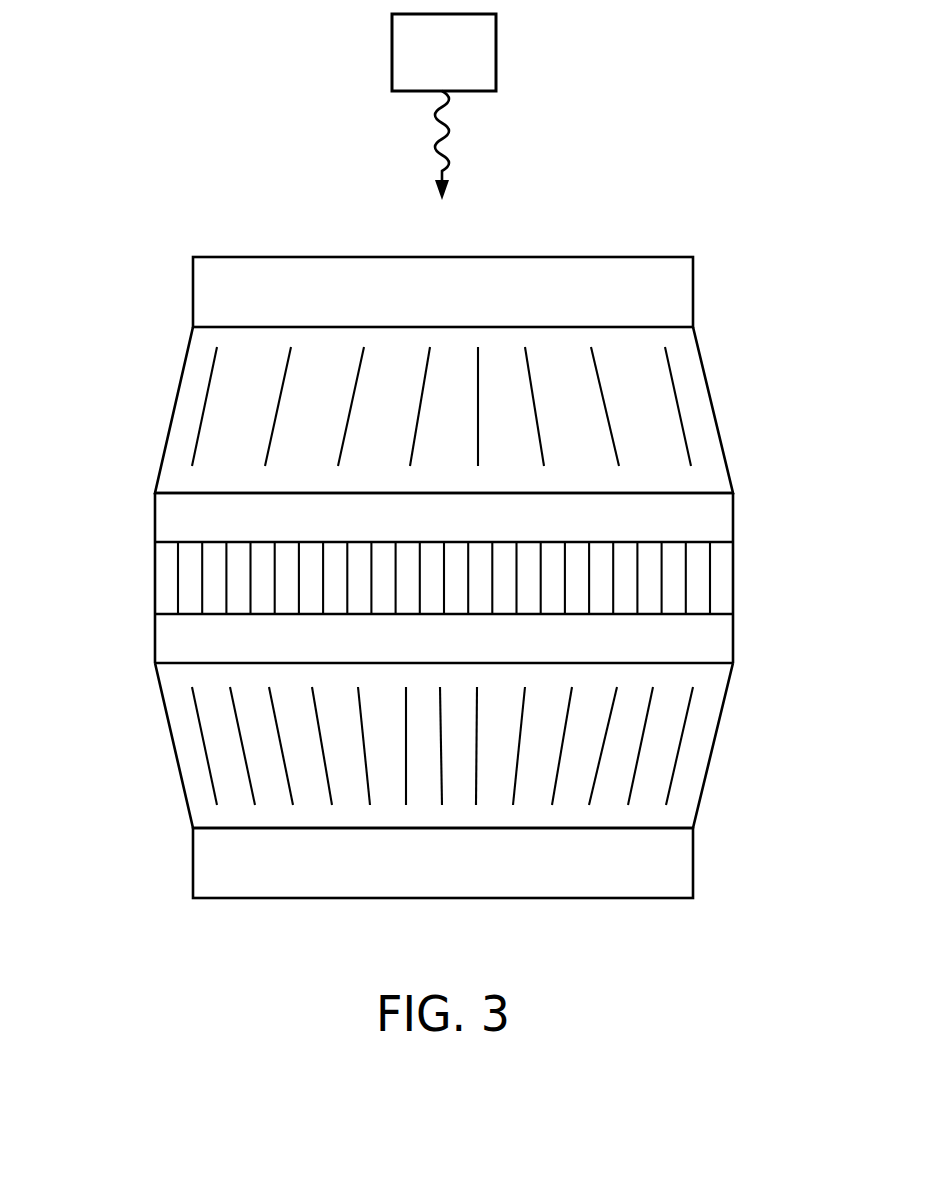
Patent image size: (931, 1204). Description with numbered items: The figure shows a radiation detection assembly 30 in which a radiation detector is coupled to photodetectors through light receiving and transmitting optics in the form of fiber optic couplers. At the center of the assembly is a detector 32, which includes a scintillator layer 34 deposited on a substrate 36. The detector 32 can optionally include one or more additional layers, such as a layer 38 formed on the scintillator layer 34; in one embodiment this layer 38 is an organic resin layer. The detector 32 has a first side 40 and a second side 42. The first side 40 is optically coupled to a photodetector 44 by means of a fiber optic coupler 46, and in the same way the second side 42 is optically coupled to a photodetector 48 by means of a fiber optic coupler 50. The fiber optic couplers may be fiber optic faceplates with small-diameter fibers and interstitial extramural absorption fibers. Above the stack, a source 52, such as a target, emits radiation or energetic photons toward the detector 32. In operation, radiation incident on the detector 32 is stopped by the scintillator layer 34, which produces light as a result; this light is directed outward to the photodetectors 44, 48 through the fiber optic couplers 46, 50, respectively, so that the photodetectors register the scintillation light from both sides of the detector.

The radiation detection assembly 30 is at (681, 121).
The detector 32 is at (110, 577).
The scintillator layer 34 is at (720, 577).
The substrate 36 is at (152, 635).
The layer 38 is at (152, 503).
The first side 40 is at (718, 497).
The second side 42 is at (705, 665).
The photodetector 44 is at (693, 298).
The fiber optic coupler 46 is at (197, 365).
The photodetector 48 is at (630, 885).
The fiber optic coupler 50 is at (193, 764).
The source 52 is at (496, 60).